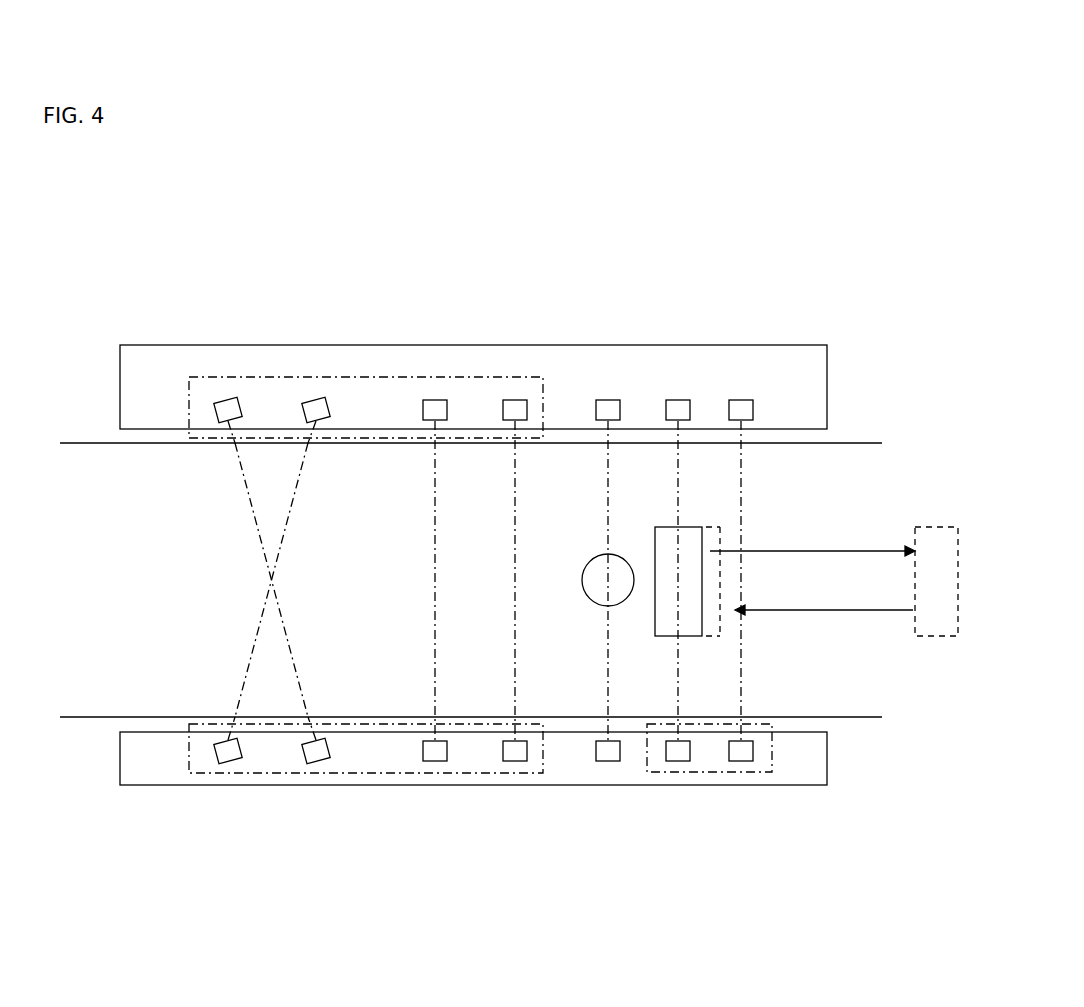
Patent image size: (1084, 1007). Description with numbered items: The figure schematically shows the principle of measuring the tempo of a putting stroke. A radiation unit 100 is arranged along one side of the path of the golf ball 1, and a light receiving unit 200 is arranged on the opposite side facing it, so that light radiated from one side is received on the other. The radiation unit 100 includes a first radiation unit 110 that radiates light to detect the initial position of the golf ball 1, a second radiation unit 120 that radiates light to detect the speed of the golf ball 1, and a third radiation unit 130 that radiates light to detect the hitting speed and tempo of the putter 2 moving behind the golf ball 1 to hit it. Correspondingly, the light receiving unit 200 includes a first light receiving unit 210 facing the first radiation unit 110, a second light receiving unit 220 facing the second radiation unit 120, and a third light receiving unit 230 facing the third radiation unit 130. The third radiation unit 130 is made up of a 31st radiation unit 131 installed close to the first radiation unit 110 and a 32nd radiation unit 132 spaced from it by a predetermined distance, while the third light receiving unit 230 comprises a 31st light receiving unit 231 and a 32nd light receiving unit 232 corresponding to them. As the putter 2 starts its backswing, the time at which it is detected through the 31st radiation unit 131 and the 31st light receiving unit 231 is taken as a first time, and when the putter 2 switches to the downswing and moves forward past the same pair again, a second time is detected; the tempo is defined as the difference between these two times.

The golf ball 1 is at (602, 556).
The putter 2 is at (688, 527).
The radiation unit 100 is at (184, 345).
The first radiation unit 110 is at (608, 399).
The second radiation unit 120 is at (371, 377).
The third radiation unit 130 is at (723, 324).
The 31st radiation unit 131 is at (678, 399).
The 32nd radiation unit 132 is at (741, 399).
The light receiving unit 200 is at (149, 786).
The first light receiving unit 210 is at (607, 762).
The second light receiving unit 220 is at (368, 774).
The third light receiving unit 230 is at (713, 829).
The 31st light receiving unit 231 is at (676, 762).
The 32nd light receiving unit 232 is at (743, 762).